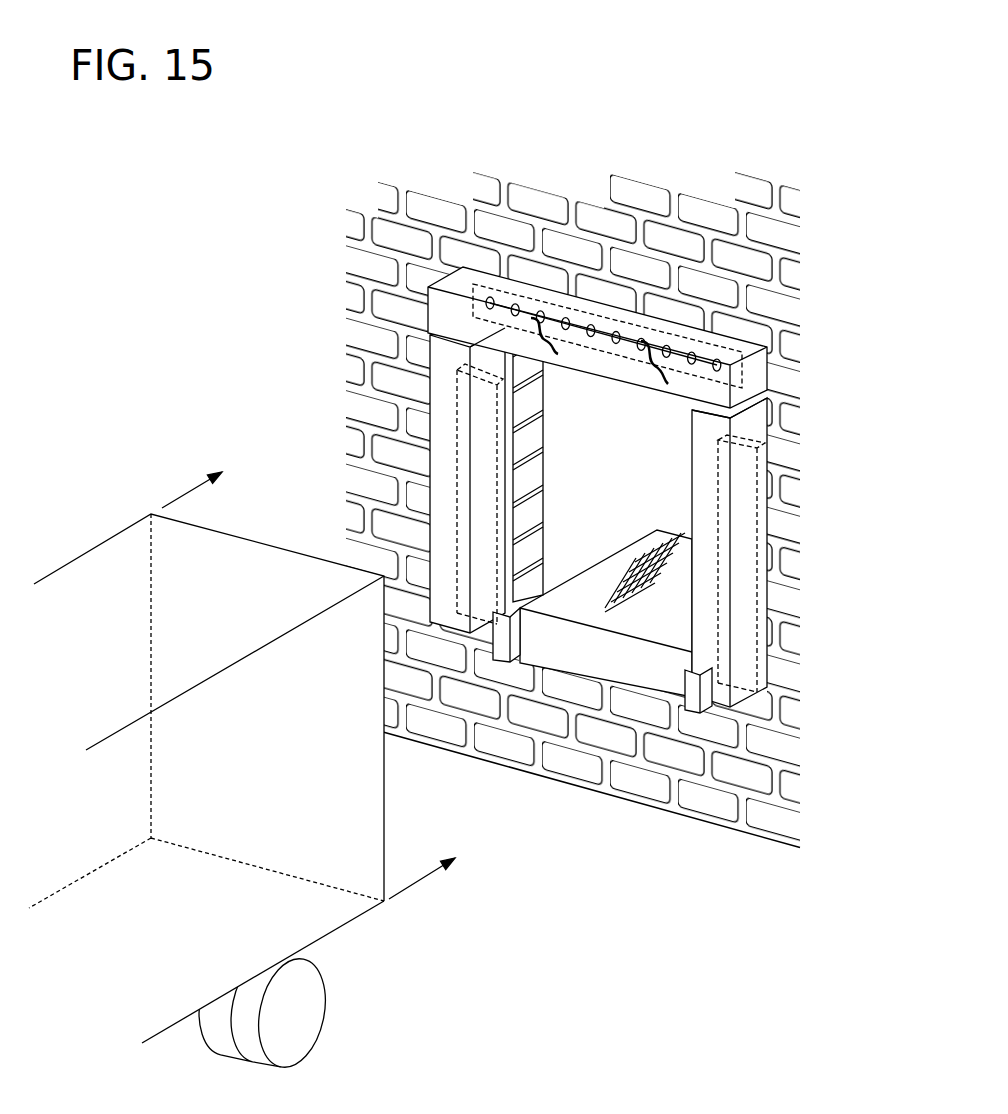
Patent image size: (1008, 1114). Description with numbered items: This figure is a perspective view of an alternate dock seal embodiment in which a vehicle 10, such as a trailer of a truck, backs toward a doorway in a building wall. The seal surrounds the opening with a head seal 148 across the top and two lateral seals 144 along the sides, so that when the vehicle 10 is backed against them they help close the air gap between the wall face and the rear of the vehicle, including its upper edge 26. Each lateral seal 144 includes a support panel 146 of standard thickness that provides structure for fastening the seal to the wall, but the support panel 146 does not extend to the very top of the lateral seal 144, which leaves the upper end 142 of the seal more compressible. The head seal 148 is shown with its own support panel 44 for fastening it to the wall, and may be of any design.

The vehicle 10 is at (74, 558).
The upper edge 26 is at (213, 530).
The support panel 44 is at (585, 313).
The upper end 142 is at (753, 418).
The lateral seal 144 is at (430, 390).
The support panel 146 is at (457, 458).
The head seal 148 is at (467, 280).